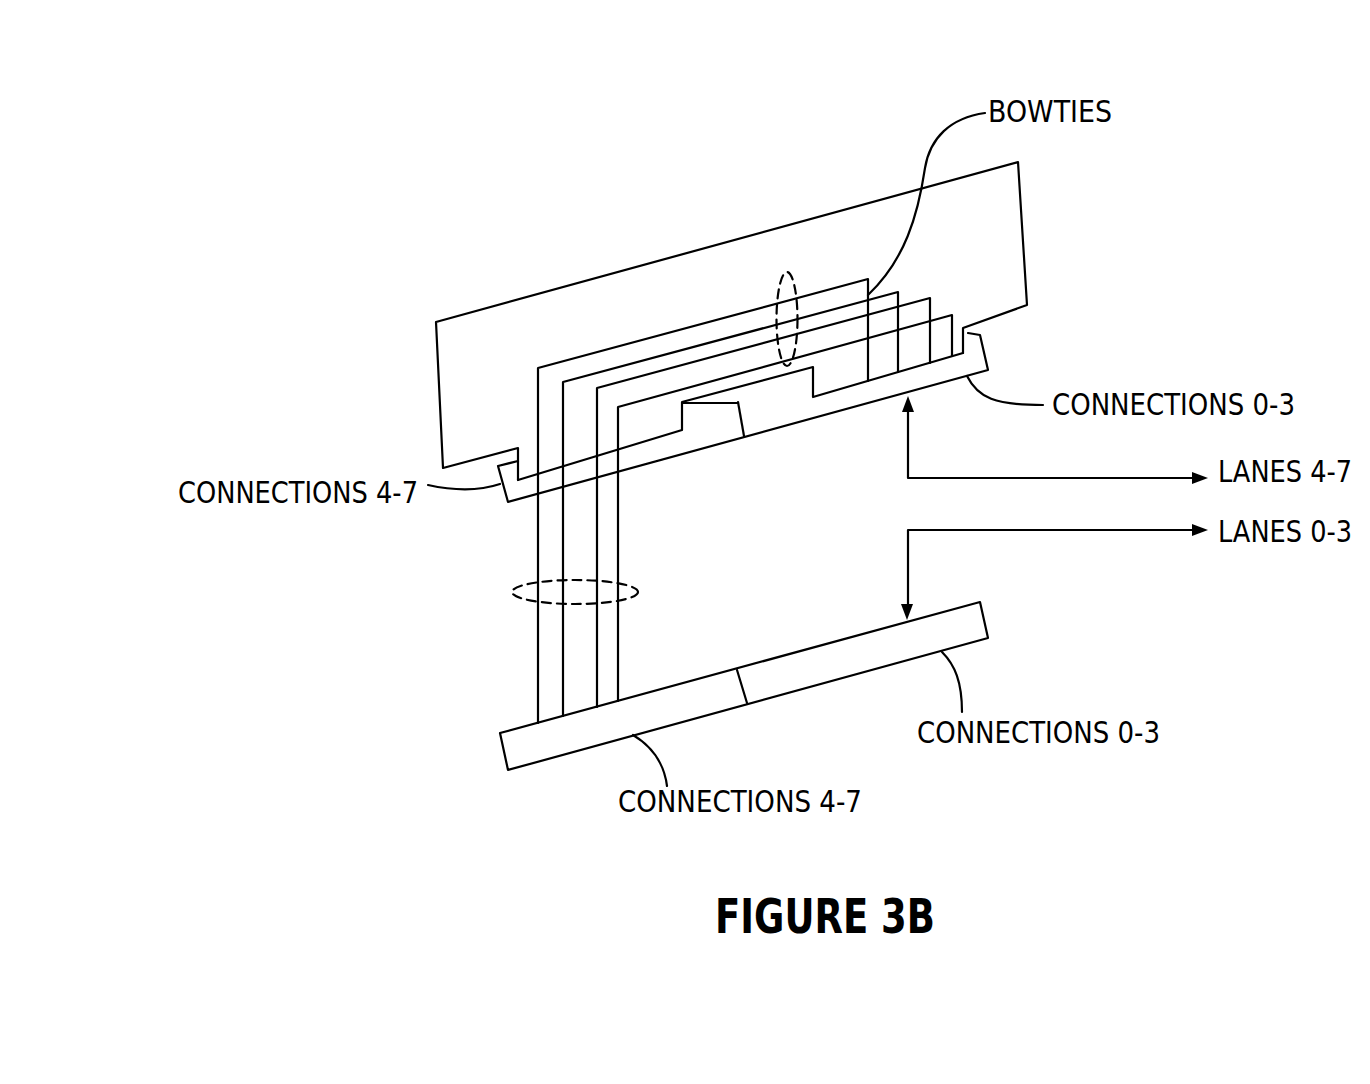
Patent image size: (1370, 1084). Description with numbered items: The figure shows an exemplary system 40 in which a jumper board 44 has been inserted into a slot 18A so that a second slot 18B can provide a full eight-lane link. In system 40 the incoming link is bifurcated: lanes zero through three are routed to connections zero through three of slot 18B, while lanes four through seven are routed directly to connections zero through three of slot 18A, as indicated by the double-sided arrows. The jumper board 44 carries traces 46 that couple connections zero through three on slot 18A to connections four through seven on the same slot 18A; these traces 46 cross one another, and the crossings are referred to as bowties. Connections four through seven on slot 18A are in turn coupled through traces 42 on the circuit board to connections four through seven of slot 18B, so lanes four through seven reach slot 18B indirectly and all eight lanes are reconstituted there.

The system 40 is at (1142, 164).
The traces 42 is at (510, 591).
The jumper board 44 is at (687, 252).
The traces 46 is at (796, 284).
The slot 18A is at (1025, 340).
The slot 18B is at (1012, 630).